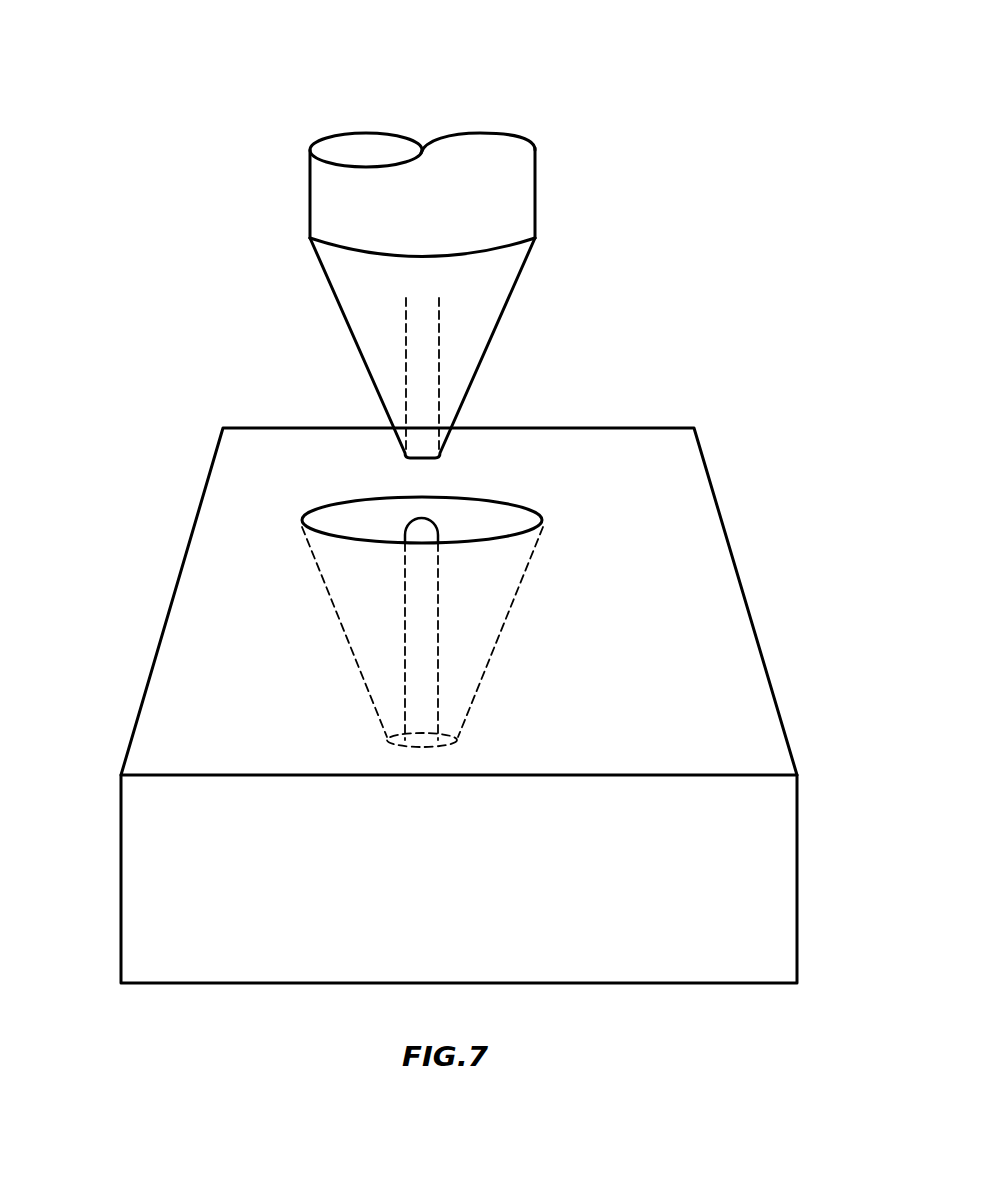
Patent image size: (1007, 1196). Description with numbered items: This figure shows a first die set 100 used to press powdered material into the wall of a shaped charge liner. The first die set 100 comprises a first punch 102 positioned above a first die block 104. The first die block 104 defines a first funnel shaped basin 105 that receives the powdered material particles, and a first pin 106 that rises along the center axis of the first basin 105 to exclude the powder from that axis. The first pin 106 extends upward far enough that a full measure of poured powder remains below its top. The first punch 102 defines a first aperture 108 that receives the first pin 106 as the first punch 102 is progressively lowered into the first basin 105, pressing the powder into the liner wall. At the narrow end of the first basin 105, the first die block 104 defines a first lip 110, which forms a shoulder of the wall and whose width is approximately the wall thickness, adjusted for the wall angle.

The first die set 100 is at (610, 96).
The first punch 102 is at (537, 192).
The first die block 104 is at (732, 555).
The first funnel shaped basin 105 is at (302, 520).
The first pin 106 is at (439, 623).
The first aperture 108 is at (439, 318).
The first lip 110 is at (448, 742).